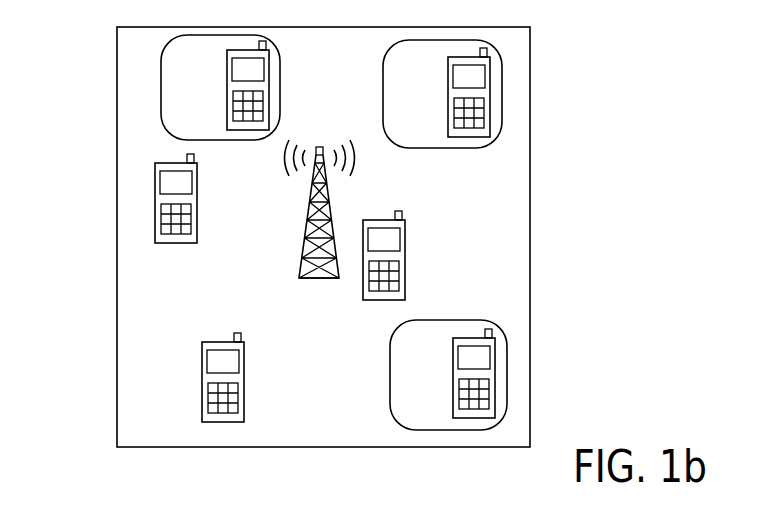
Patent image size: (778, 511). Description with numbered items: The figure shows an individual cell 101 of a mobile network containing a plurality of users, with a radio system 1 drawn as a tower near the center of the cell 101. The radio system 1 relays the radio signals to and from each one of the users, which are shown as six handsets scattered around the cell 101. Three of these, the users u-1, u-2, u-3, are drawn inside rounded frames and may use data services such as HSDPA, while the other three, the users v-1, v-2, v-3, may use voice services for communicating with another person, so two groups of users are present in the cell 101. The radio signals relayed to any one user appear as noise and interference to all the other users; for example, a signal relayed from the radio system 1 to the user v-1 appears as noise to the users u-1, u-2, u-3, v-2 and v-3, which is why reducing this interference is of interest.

The cell 101 is at (117, 50).
The radio system 1 is at (307, 222).
The user u-1 is at (227, 86).
The user u-2 is at (456, 400).
The user u-3 is at (448, 92).
The user v-1 is at (172, 245).
The user v-2 is at (202, 395).
The user v-3 is at (362, 291).